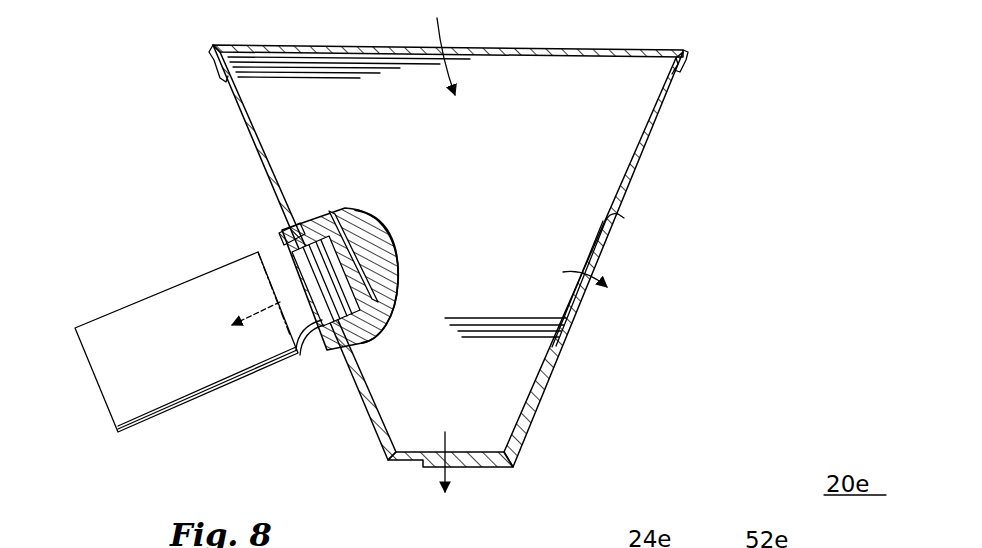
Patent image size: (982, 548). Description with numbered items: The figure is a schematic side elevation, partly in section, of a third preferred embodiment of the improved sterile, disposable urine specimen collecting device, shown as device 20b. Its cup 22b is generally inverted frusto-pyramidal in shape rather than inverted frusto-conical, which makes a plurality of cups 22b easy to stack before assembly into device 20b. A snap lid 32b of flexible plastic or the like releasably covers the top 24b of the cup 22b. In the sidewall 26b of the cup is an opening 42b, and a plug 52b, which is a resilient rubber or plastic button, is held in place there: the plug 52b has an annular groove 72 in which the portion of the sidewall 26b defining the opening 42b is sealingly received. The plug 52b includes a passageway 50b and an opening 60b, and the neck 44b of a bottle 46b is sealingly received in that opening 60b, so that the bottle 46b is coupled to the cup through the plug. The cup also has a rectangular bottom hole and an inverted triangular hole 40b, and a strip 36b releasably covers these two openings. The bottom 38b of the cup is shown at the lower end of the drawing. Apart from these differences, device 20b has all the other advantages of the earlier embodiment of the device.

The device 20b is at (521, 257).
The cup 22b is at (645, 150).
The top 24b is at (490, 67).
The sidewall 26b is at (259, 152).
The snap lid 32b is at (640, 48).
The strip 36b is at (610, 235).
The bottom wall 38b is at (443, 463).
The hole 40b is at (607, 298).
The opening 42b is at (282, 238).
The neck 44b is at (322, 348).
The bottle 46b is at (162, 285).
The passageway 50b is at (330, 208).
The plug 52b is at (396, 256).
The opening 60b is at (358, 332).
The annular groove 72 is at (298, 222).